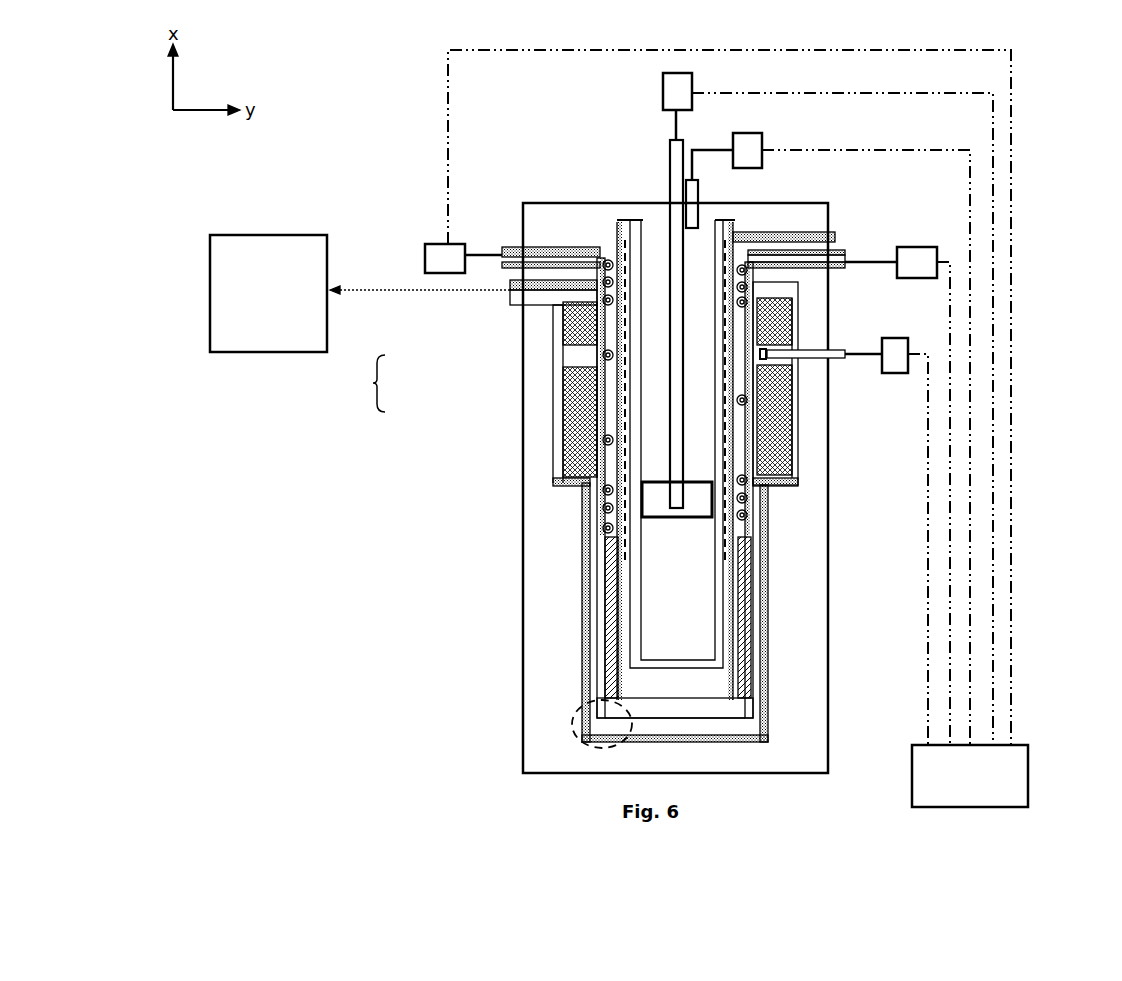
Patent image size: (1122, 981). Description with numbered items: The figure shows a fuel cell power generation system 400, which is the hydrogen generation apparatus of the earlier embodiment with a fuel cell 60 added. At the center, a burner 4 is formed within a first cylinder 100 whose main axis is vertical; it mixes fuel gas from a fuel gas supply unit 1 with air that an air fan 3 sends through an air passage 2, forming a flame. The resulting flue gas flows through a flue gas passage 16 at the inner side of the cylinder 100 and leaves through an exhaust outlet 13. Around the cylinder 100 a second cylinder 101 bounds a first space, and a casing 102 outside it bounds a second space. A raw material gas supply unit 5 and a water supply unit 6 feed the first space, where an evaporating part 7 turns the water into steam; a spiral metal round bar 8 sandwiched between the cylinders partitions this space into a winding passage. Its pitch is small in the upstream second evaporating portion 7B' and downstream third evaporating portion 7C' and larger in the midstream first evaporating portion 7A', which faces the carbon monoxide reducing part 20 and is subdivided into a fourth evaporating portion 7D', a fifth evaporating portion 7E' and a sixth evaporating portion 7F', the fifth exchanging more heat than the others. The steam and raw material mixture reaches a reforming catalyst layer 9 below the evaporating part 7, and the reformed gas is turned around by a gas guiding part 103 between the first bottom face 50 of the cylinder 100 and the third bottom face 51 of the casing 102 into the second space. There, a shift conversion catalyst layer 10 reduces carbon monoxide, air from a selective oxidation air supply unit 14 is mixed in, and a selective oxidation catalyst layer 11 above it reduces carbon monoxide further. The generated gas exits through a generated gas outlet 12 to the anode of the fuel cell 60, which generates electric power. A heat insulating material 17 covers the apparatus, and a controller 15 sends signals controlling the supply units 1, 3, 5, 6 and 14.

The fuel gas supply unit 1 is at (672, 88).
The air passage 2 is at (658, 273).
The air fan 3 is at (750, 150).
The burner 4 is at (688, 497).
The raw material gas supply unit 5 is at (912, 262).
The water supply unit 6 is at (443, 253).
The evaporating part 7 is at (606, 393).
The round bar 8 is at (603, 438).
The reforming catalyst layer 9 is at (747, 623).
The shift conversion catalyst layer 10 is at (563, 413).
The selective oxidation catalyst layer 11 is at (580, 333).
The generated gas outlet 12 is at (512, 292).
The exhaust outlet 13 is at (832, 233).
The selective oxidation air supply unit 14 is at (897, 345).
The controller 15 is at (1001, 764).
The flue gas passage 16 is at (625, 547).
The heat insulating material 17 is at (540, 625).
The carbon monoxide reducing part 20 is at (363, 383).
The first bottom face 50 is at (653, 700).
The third bottom face 51 is at (705, 742).
The fuel cell 60 is at (247, 258).
The cylinder 100 is at (617, 463).
The cylinder 101 is at (597, 457).
The casing 102 is at (582, 672).
The gas guiding part 103 is at (570, 727).
The fuel cell power generation system 400 is at (368, 59).
The first evaporating portion 7A' is at (522, 364).
The second evaporating portion 7B' is at (516, 316).
The third evaporating portion 7C' is at (588, 414).
The fourth evaporating portion 7D' is at (814, 332).
The fifth evaporating portion 7E' is at (822, 372).
The sixth evaporating portion 7F' is at (822, 405).